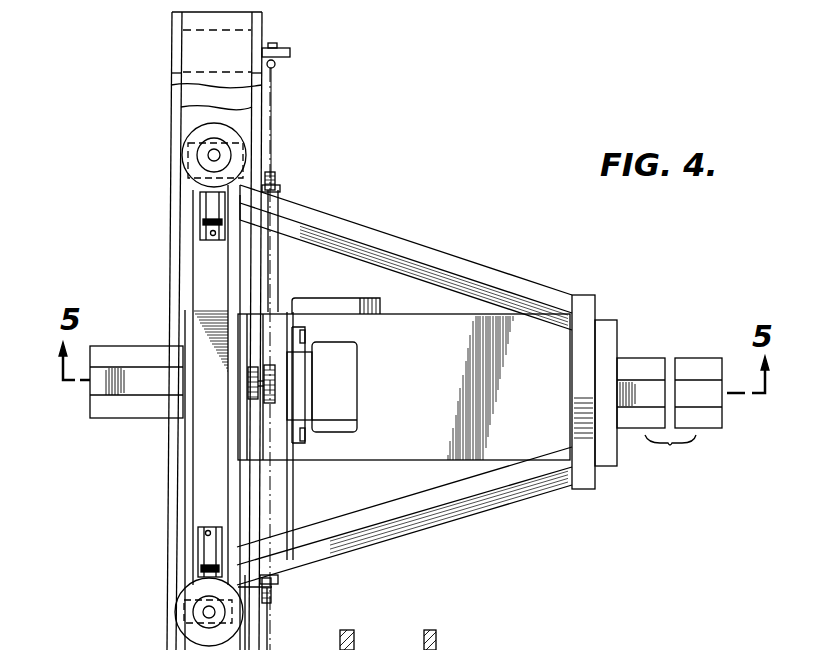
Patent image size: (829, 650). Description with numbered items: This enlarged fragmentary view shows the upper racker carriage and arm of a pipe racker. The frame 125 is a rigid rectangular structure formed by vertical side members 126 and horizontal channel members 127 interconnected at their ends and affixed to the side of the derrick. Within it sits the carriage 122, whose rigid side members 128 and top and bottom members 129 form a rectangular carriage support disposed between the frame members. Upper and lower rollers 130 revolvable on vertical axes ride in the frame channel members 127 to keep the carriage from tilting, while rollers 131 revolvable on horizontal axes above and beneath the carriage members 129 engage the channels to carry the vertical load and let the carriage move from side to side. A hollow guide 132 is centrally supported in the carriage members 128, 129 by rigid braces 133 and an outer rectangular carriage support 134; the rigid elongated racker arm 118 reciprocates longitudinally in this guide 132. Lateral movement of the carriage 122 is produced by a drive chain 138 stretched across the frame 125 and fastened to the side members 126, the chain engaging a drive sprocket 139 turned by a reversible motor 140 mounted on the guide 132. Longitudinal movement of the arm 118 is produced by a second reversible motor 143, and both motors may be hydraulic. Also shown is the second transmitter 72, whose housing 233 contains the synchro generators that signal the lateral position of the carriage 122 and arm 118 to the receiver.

The coupling 72 is at (305, 398).
The racker arm 118 is at (653, 365).
The carriage 122 is at (538, 277).
The frame 125 is at (172, 116).
The vertical side member 126 is at (186, 29).
The horizontal channel member 127 is at (177, 97).
The side member 128 is at (232, 143).
The top and bottom member 129 is at (206, 485).
The roller 130 is at (186, 152).
The roller 131 is at (206, 217).
The hollow guide 132 is at (394, 467).
The brace 133 is at (425, 254).
The outer rectangular carriage support 134 is at (585, 479).
The drive chain 138 is at (271, 277).
The drive sprocket 139 is at (264, 397).
The reversible motor 140 is at (347, 357).
The reversible motor 143 is at (378, 304).
The housing 233 is at (330, 382).